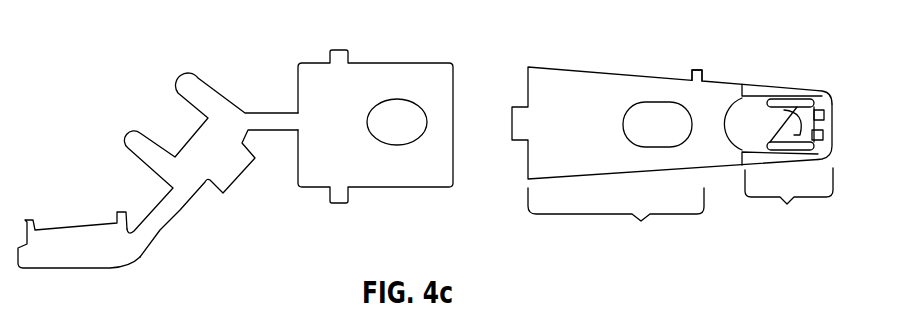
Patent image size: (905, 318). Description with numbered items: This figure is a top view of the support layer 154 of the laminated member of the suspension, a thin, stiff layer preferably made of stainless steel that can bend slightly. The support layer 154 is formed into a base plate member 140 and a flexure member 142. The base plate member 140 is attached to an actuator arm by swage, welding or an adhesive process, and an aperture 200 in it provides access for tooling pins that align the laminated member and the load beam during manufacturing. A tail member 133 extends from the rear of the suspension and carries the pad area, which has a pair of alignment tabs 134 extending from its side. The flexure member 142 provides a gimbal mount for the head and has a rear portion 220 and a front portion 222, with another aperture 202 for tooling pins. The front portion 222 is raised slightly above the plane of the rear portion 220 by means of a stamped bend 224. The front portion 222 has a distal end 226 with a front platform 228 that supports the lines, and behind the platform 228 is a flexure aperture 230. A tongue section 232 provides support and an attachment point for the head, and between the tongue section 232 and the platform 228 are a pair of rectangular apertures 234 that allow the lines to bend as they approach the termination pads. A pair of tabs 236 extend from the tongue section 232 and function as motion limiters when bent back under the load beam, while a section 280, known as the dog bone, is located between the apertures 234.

The tail member 133 is at (170, 227).
The alignment tabs 134 is at (115, 213).
The base plate member 140 is at (400, 173).
The flexure member 142 is at (713, 72).
The support layer 154 is at (400, 77).
The aperture 200 is at (378, 102).
The aperture 202 is at (625, 108).
The rear portion 220 is at (616, 221).
The front portion 222 is at (789, 201).
The stamped bend 224 is at (743, 97).
The distal end 226 is at (834, 115).
The front platform 228 is at (831, 132).
The flexure aperture 230 is at (752, 112).
The tongue section 232 is at (821, 92).
The rectangular apertures 234 is at (826, 108).
The tabs 236 is at (789, 112).
The dog bone section 280 is at (833, 121).